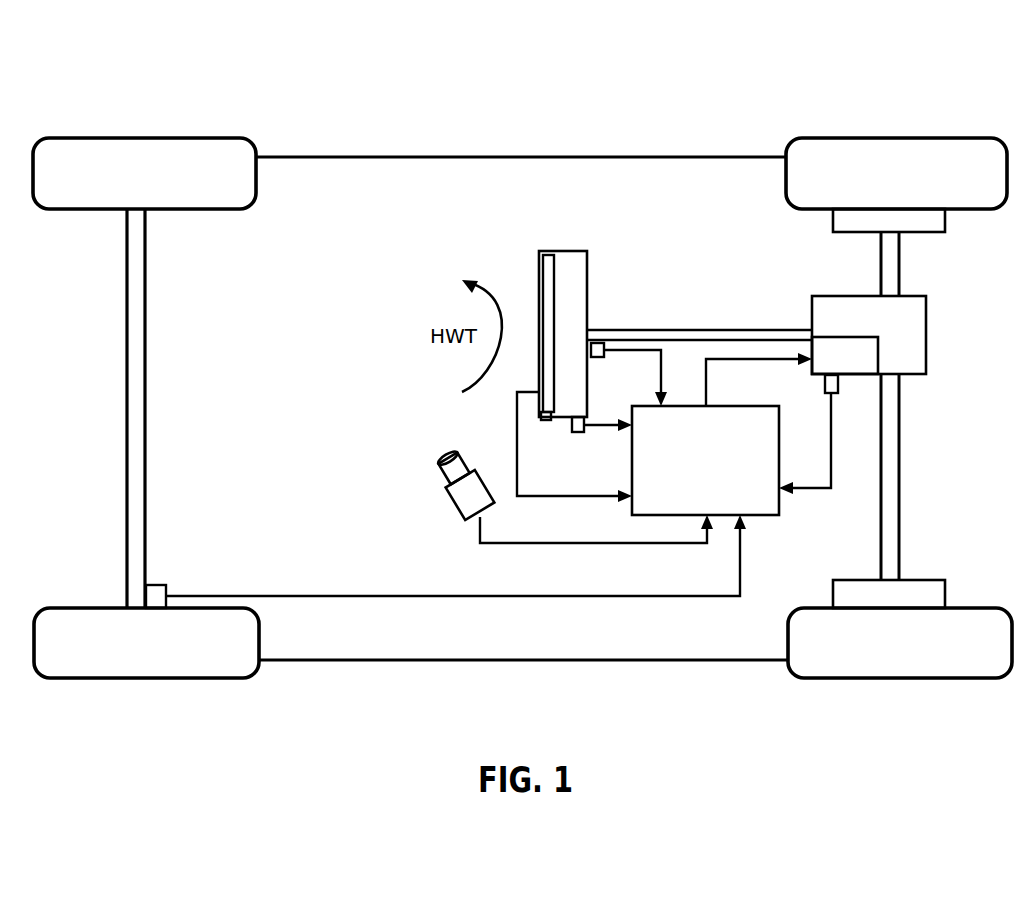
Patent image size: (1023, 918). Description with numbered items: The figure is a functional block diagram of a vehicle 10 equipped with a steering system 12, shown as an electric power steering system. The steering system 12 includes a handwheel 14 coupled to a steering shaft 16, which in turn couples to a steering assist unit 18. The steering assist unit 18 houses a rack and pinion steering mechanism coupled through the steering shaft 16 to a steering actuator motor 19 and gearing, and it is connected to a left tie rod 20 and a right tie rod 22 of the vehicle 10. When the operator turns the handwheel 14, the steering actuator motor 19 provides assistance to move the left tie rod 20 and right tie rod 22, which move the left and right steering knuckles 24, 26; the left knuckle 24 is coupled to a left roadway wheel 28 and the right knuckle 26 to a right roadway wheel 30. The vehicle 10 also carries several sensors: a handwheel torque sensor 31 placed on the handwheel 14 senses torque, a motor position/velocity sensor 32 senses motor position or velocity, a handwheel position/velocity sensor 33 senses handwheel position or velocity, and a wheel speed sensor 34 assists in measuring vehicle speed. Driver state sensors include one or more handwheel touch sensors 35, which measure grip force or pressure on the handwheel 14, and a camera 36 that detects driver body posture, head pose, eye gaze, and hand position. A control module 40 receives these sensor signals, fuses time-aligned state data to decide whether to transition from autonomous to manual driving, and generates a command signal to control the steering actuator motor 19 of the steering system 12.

The vehicle 10 is at (561, 60).
The steering system 12 is at (670, 224).
The handwheel 14 is at (563, 250).
The steering shaft 16 is at (672, 328).
The steering assist unit 18 is at (927, 334).
The steering actuator motor 19 is at (860, 367).
The left tie rod 20 is at (900, 275).
The right tie rod 22 is at (900, 448).
The left steering knuckle 24 is at (840, 210).
The right steering knuckle 26 is at (862, 580).
The left roadway wheel 28 is at (935, 138).
The right roadway wheel 30 is at (950, 608).
The handwheel torque sensor 31 is at (596, 358).
The motor position/velocity sensor 32 is at (836, 393).
The handwheel position/velocity sensor 33 is at (582, 430).
The wheel speed sensor 34 is at (160, 585).
The handwheel touch sensor 35 is at (546, 420).
The camera 36 is at (452, 507).
The control module 40 is at (726, 405).